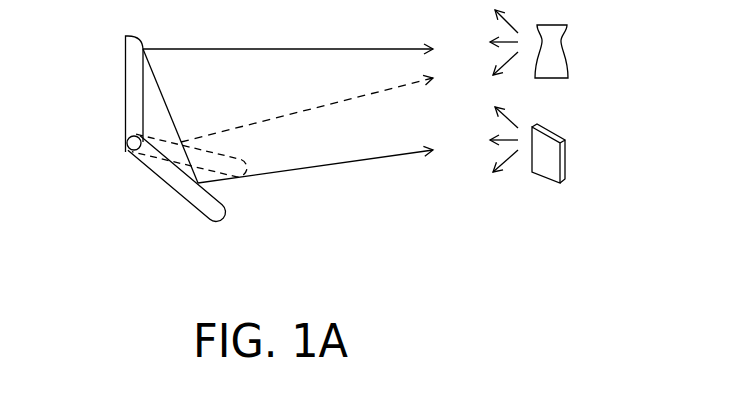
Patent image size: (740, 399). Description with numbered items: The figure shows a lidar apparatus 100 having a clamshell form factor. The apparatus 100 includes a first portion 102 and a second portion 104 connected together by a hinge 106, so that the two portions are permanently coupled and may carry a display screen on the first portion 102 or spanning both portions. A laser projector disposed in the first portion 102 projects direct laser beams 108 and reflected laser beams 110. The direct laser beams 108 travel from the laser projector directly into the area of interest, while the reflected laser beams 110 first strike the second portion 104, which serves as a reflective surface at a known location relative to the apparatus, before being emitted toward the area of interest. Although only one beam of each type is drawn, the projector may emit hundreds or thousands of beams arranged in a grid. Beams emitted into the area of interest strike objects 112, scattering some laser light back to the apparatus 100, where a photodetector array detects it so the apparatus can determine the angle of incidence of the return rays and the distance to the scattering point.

The lidar apparatus 100 is at (298, 311).
The first portion 102 is at (125, 78).
The second portion 104 is at (172, 190).
The hinge 106 is at (128, 141).
The direct laser beams 108 is at (282, 48).
The reflected laser beams 110 is at (313, 171).
The objects 112 is at (568, 50).